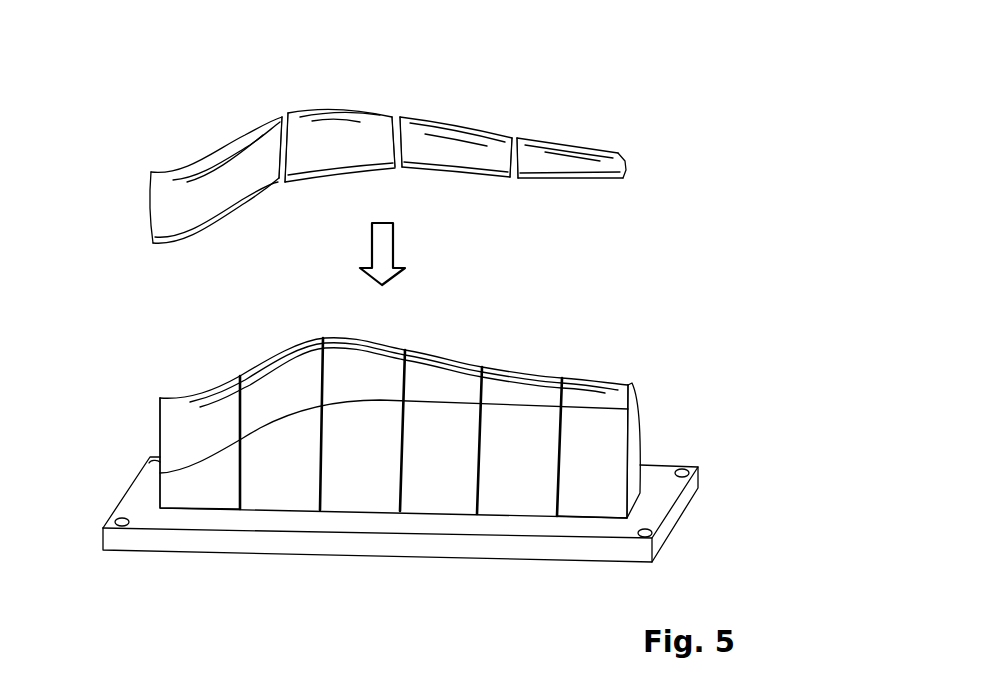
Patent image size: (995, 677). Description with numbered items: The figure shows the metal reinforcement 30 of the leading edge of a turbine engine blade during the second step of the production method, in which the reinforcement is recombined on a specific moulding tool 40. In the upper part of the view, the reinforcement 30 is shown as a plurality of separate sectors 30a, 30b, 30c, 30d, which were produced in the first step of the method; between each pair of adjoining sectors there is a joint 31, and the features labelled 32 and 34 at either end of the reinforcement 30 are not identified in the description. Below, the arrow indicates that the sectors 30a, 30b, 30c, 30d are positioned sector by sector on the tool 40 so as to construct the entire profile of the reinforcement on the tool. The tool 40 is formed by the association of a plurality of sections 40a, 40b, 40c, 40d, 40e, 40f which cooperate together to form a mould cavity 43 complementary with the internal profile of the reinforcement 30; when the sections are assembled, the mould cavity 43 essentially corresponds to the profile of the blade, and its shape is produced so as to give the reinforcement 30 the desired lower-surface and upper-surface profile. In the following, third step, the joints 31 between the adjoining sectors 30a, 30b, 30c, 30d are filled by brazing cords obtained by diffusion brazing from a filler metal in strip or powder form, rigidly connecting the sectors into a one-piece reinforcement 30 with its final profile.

The metal reinforcement 30 is at (175, 153).
The sector 30a is at (220, 170).
The sector 30b is at (342, 130).
The sector 30c is at (448, 132).
The sector 30d is at (578, 158).
The joint 31 is at (288, 113).
The first end of preform 32 is at (149, 201).
The second end of preform 34 is at (632, 162).
The moulding tool 40 is at (670, 416).
The section 40a is at (212, 410).
The section 40b is at (275, 372).
The section 40c is at (345, 353).
The section 40d is at (460, 375).
The section 40e is at (523, 383).
The section 40f is at (605, 393).
The mould cavity 43 is at (148, 425).